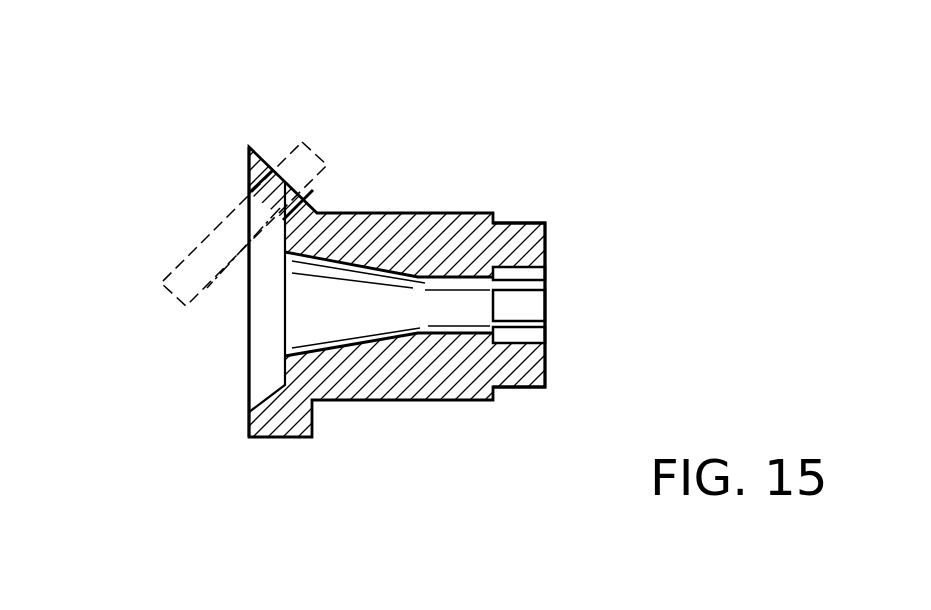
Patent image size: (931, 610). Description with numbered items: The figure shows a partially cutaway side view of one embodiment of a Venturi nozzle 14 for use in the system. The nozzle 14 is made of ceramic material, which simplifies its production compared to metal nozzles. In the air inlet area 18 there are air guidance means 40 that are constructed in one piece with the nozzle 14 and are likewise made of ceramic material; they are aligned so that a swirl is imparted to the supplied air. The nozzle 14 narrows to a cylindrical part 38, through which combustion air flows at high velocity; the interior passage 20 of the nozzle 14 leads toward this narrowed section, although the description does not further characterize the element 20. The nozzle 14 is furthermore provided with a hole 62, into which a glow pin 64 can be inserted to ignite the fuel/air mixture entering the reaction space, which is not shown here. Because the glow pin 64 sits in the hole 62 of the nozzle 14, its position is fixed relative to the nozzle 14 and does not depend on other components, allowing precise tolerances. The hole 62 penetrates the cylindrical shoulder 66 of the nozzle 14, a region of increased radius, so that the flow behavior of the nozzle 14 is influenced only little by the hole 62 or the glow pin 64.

The Venturi nozzle 14 is at (412, 212).
The air inlet area 18 is at (517, 217).
The bore 20 is at (361, 316).
The cylindrical part 38 is at (461, 315).
The air guidance means 40 is at (545, 237).
The hole 62 is at (292, 190).
The glow pin 64 is at (197, 258).
The cylindrical shoulder 66 is at (275, 439).